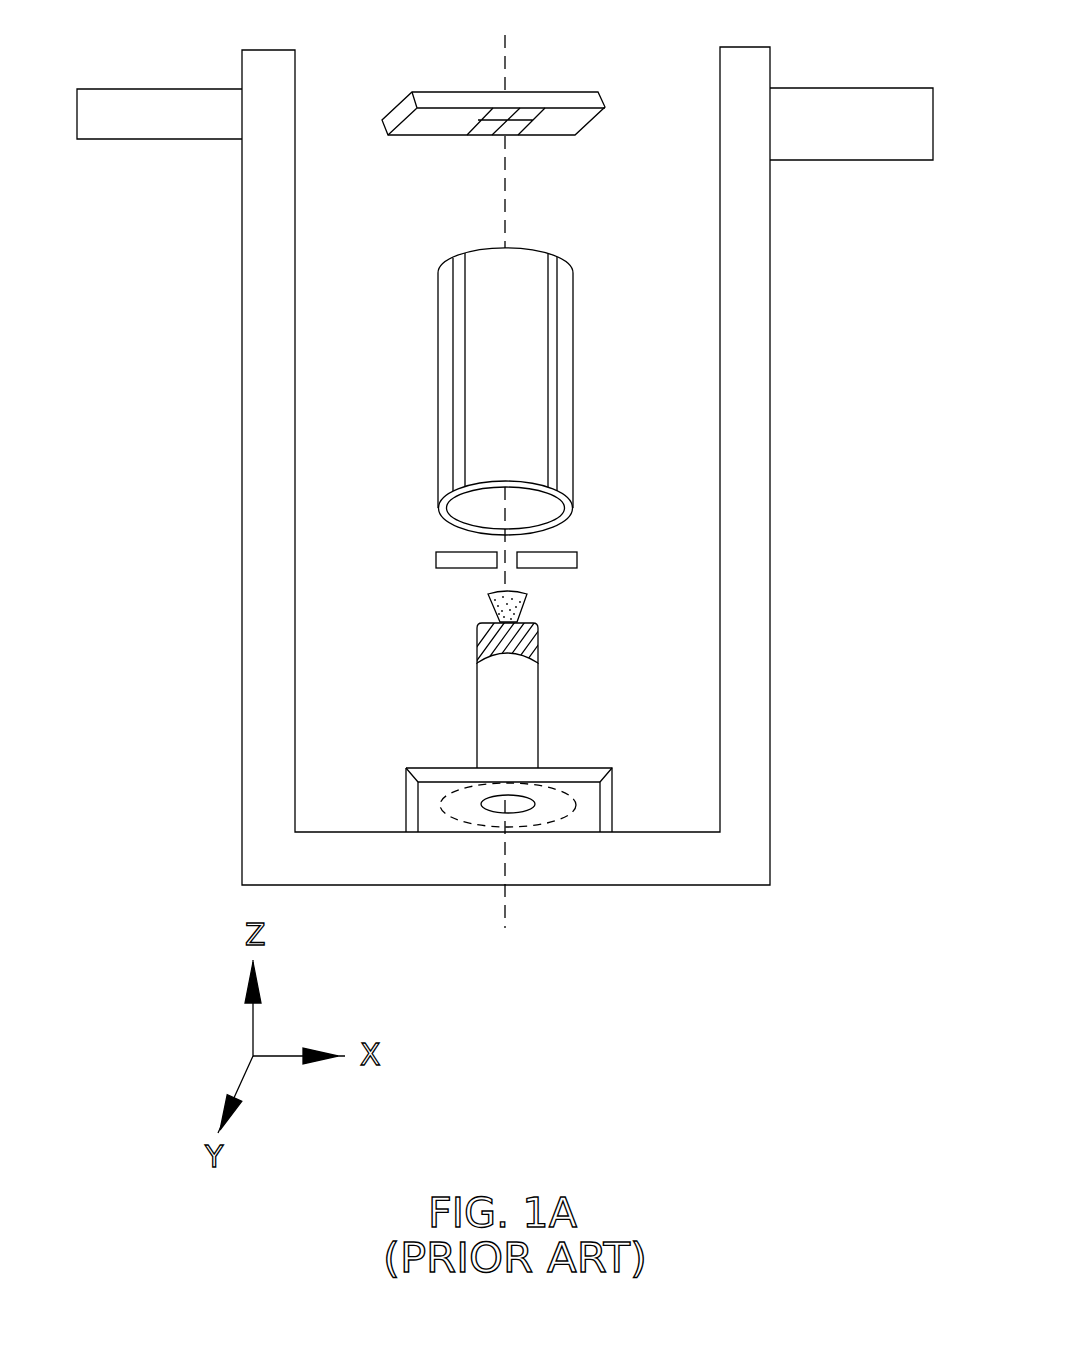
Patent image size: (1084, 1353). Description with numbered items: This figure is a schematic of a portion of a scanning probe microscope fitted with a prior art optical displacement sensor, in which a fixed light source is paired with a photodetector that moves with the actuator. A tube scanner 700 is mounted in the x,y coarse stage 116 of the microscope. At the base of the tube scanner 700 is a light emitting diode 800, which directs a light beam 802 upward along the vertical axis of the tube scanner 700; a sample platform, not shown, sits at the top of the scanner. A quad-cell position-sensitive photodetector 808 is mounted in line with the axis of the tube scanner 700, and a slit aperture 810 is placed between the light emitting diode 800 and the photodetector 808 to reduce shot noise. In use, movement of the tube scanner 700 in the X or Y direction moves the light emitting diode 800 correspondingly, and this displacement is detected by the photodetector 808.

The x,y coarse stage 116 is at (162, 178).
The quad-cell position-sensitive photodetector 808 is at (515, 127).
The tube scanner 700 is at (573, 373).
The slit aperture 810 is at (567, 552).
The light beam 802 is at (508, 562).
The light emitting diode 800 is at (520, 620).